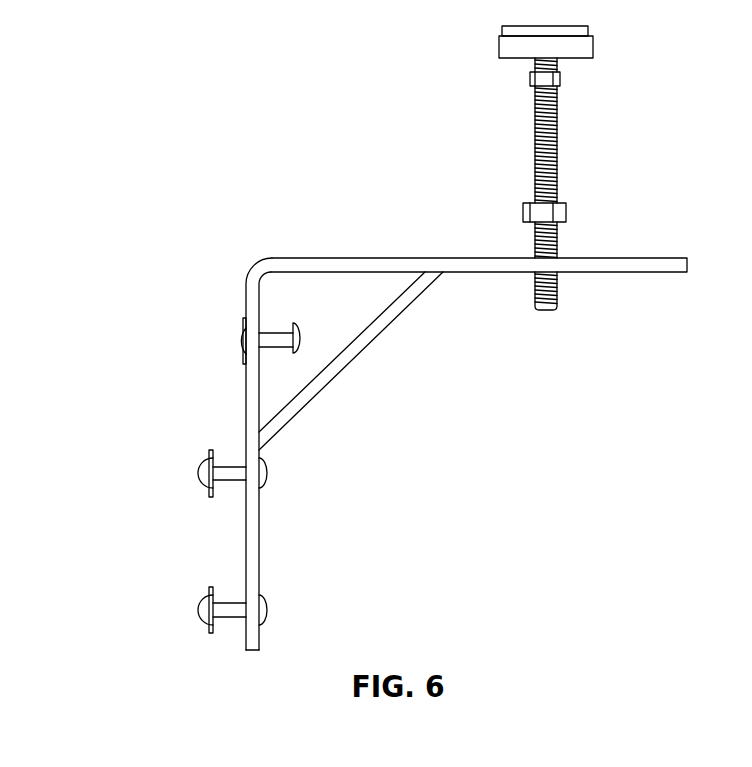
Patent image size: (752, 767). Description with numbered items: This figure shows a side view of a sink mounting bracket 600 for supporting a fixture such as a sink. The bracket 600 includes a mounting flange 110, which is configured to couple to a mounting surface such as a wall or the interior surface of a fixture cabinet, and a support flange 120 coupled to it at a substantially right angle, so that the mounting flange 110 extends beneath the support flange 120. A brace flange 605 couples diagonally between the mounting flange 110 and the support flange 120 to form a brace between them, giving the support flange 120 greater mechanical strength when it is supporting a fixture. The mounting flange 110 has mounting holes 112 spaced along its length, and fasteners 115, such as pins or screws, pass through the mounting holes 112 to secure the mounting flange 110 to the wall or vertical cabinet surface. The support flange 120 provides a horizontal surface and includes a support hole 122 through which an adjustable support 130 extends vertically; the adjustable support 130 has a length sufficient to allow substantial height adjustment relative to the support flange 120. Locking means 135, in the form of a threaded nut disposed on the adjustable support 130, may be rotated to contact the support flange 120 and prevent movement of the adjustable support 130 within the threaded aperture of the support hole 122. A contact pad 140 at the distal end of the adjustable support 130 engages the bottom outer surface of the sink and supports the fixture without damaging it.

The mounting bracket 600 is at (86, 272).
The mounting flange 110 is at (253, 562).
The support flange 120 is at (650, 262).
The brace flange 605 is at (392, 360).
The fasteners 115 is at (177, 604).
The mounting holes 112 is at (288, 476).
The adjustable support 130 is at (588, 172).
The support hole 122 is at (521, 294).
The locking means 135 is at (553, 213).
The contact pad 140 is at (582, 30).